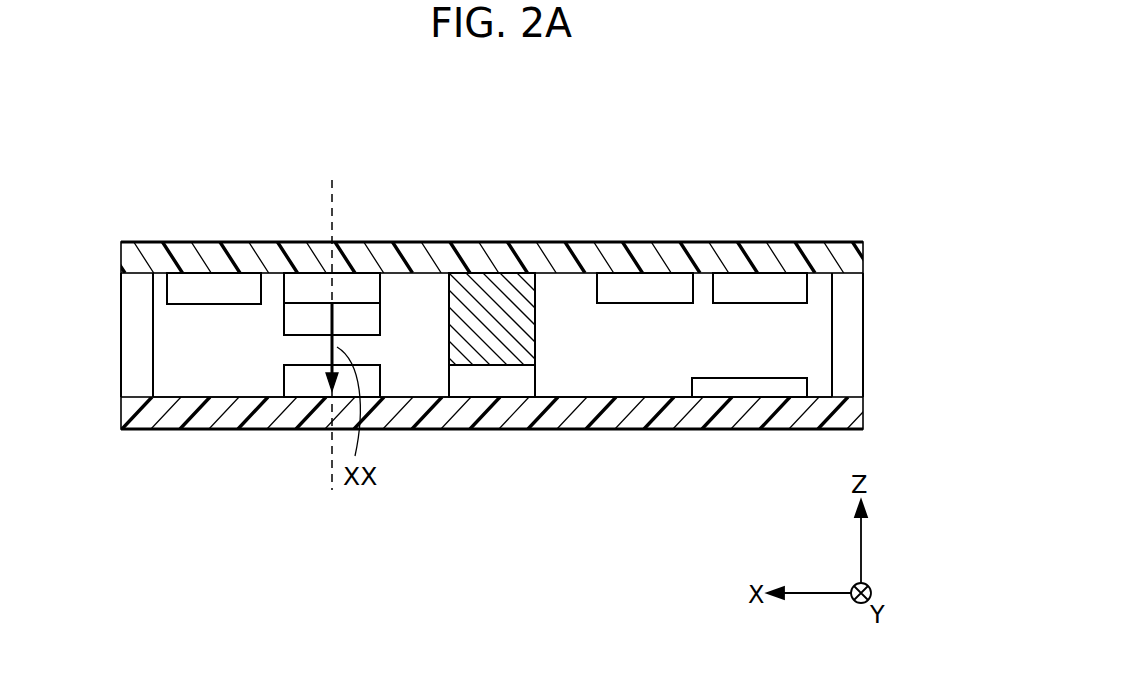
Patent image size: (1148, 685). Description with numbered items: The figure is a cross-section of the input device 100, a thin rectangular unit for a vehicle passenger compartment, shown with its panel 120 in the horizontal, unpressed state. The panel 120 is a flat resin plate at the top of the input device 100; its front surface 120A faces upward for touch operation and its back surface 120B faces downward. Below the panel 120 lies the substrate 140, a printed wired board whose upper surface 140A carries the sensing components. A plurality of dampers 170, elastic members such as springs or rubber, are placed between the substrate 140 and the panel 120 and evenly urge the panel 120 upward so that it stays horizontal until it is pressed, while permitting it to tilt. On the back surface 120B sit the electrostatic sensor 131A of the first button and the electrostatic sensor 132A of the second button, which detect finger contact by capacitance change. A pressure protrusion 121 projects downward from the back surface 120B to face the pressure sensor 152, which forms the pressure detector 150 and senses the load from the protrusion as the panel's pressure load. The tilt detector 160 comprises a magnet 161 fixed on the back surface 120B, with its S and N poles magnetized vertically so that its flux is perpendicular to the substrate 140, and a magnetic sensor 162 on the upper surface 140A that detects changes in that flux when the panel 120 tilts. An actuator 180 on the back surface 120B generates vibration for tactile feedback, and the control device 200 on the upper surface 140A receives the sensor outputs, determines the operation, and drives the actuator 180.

The input device 100 is at (870, 86).
The panel 120 is at (525, 336).
The front surface 120A is at (762, 241).
The back surface 120B is at (423, 273).
The pressure protrusion 121 is at (485, 285).
The electrostatic sensor 131A is at (798, 288).
The electrostatic sensor 132A is at (640, 285).
The substrate 140 is at (573, 415).
The upper surface 140A is at (568, 394).
The pressure detector 150 is at (495, 352).
The pressure sensor 152 is at (498, 378).
The tilt detector 160 is at (312, 338).
The magnet 161 is at (290, 322).
The magnetic sensor 162 is at (290, 380).
The damper 170 is at (137, 340).
The actuator 180 is at (185, 288).
The control device 200 is at (798, 385).